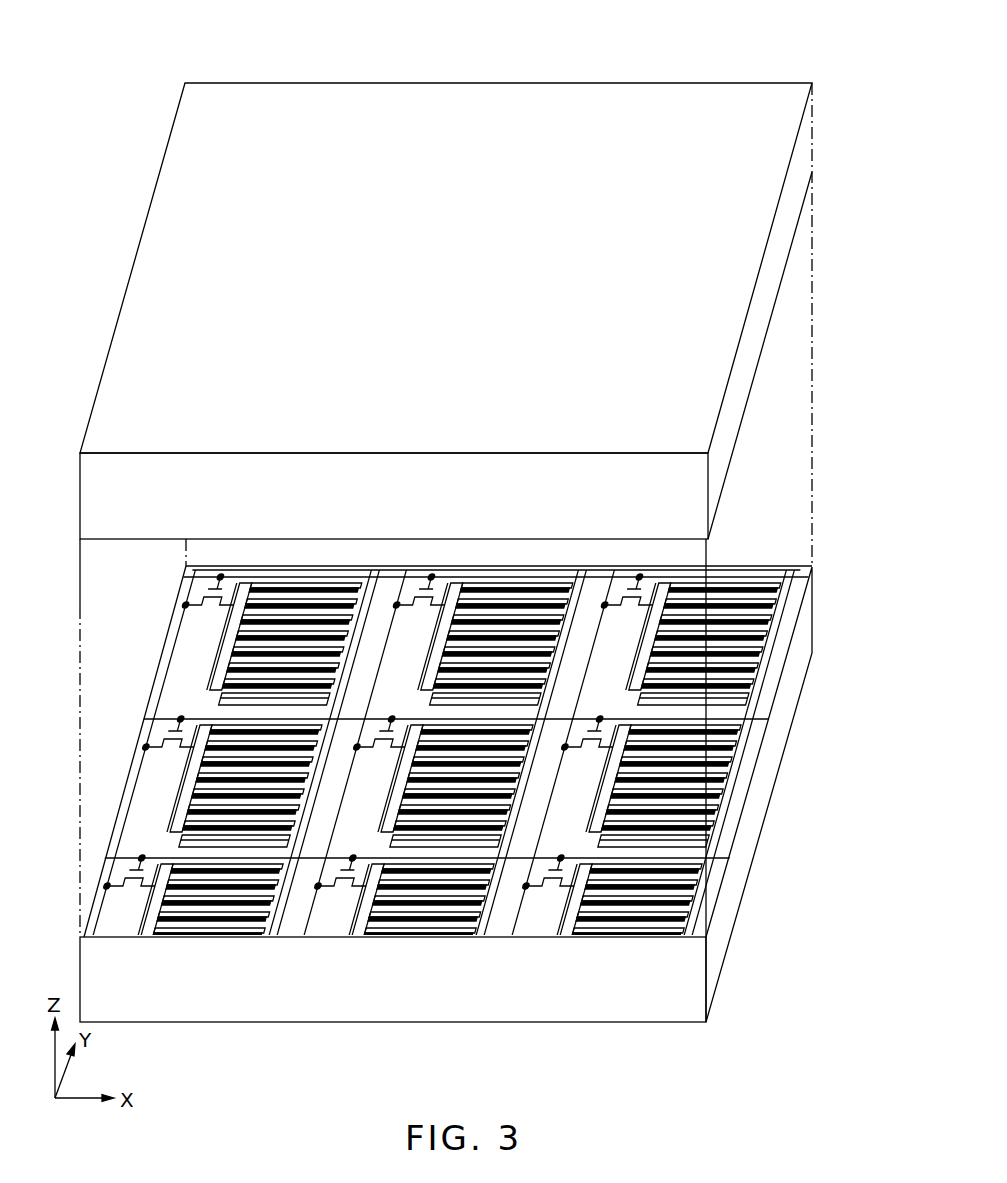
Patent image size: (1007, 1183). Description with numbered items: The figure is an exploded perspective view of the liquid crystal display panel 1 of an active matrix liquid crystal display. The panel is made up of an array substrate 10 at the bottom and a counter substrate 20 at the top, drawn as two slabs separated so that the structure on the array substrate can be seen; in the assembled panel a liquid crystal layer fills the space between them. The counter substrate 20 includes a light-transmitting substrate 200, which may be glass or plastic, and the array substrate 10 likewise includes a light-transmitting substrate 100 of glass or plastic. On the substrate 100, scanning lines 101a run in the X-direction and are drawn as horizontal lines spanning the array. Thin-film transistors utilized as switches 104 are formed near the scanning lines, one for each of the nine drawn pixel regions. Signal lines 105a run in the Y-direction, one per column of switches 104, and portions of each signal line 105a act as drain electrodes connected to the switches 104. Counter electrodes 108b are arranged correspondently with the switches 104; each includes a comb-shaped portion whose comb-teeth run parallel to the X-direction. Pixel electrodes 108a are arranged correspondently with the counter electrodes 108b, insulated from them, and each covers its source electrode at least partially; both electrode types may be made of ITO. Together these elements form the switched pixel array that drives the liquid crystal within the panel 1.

The liquid crystal display panel 1 is at (462, 512).
The counter substrate 20 is at (467, 307).
The light-transmitting substrate 200 is at (807, 137).
The array substrate 10 is at (439, 778).
The light-transmitting substrate 100 is at (793, 682).
The scanning line 101a is at (374, 718).
The switch 104 is at (381, 747).
The signal line 105a is at (327, 838).
The pixel electrode 108a is at (390, 817).
The counter electrode 108b is at (522, 815).